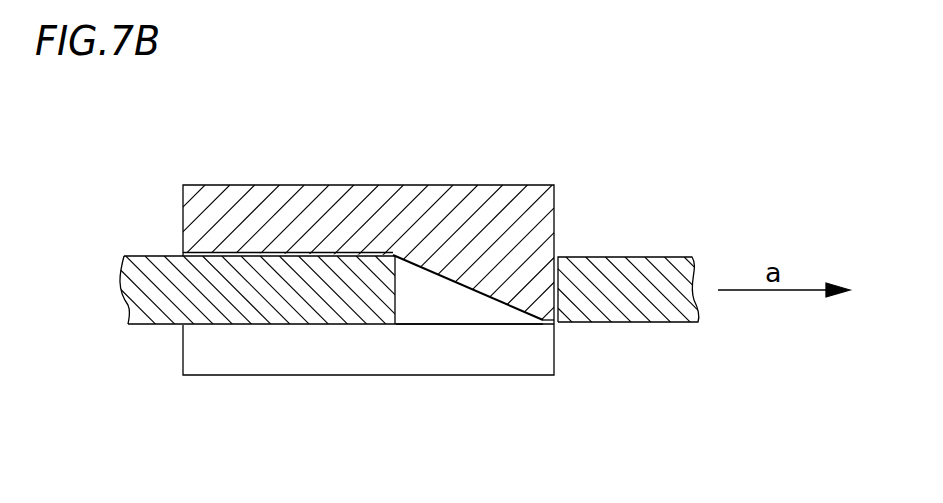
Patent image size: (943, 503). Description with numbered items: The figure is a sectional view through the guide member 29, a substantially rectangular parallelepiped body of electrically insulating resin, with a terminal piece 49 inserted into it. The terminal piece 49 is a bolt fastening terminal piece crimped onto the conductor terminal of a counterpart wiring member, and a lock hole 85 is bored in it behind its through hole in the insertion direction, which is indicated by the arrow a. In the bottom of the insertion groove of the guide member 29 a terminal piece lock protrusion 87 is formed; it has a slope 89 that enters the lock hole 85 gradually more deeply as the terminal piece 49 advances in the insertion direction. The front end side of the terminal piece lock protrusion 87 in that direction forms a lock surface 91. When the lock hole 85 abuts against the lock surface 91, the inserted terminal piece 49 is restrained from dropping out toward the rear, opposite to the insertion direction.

The guide member 29 is at (260, 168).
The terminal piece 49 is at (148, 242).
The lock hole 85 is at (395, 296).
The terminal piece lock protrusion 87 is at (518, 283).
The slope 89 is at (468, 285).
The lock surface 91 is at (566, 286).